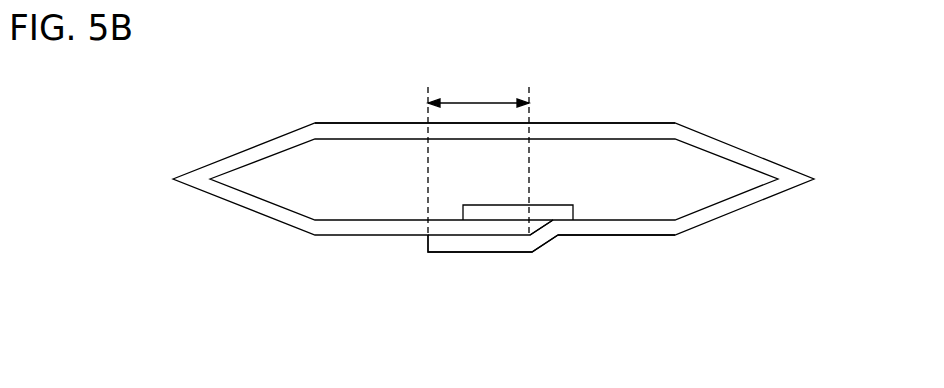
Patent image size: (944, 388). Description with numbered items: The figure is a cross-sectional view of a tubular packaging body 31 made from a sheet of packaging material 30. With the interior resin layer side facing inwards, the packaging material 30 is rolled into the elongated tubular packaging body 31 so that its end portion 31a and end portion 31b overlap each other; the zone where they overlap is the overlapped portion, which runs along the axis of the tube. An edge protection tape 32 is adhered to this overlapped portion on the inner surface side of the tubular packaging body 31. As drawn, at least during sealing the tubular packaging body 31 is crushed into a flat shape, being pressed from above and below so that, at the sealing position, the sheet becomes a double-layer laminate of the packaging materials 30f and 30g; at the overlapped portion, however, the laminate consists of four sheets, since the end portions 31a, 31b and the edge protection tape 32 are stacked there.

The packaging material 30 is at (752, 153).
The tubular packaging body 31 is at (740, 120).
The end portion 31a is at (437, 228).
The end portion 31b is at (477, 242).
The packaging material 30f is at (618, 123).
The packaging material 30g is at (622, 237).
The edge protection tape 32 is at (538, 205).